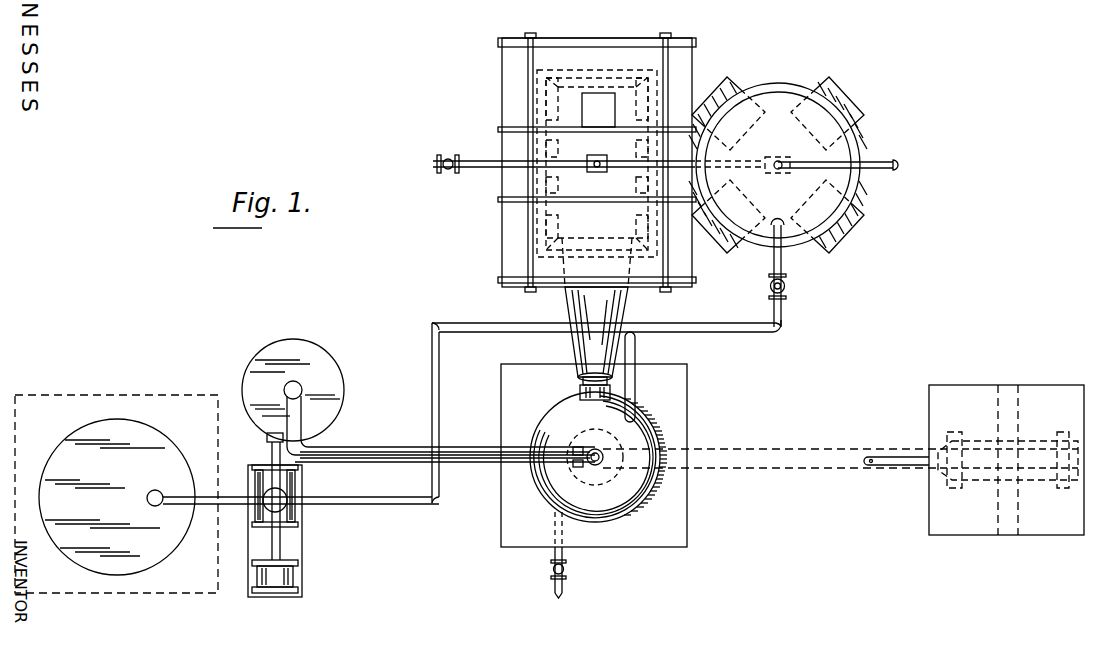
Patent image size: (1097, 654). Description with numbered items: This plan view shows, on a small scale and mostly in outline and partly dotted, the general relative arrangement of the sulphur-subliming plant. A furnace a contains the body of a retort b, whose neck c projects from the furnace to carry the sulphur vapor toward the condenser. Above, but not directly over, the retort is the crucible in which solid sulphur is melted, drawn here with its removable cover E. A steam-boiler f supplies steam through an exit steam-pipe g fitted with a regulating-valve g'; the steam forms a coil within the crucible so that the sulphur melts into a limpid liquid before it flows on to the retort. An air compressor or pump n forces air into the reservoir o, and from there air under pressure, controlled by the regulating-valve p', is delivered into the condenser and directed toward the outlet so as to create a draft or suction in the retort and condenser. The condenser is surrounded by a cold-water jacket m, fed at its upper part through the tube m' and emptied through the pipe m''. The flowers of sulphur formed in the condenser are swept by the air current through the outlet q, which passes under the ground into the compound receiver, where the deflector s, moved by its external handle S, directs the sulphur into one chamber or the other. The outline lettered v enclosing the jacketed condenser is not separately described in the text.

The furnace a is at (564, 162).
The retort b is at (597, 178).
The neck c is at (633, 305).
The cover E is at (793, 165).
The exit steam-pipe g is at (472, 430).
The regulating-valve g' is at (791, 273).
The reservoir o is at (418, 400).
The air compressor n is at (292, 533).
The steam-boiler f is at (116, 494).
The casing of measuring drum v is at (594, 455).
The cold-water jacket m is at (598, 449).
The regulating-valve p' is at (567, 445).
The tube m' is at (649, 377).
The pipe m'' is at (581, 555).
The outlet q is at (792, 470).
The handle S is at (910, 466).
The deflector s is at (1028, 448).